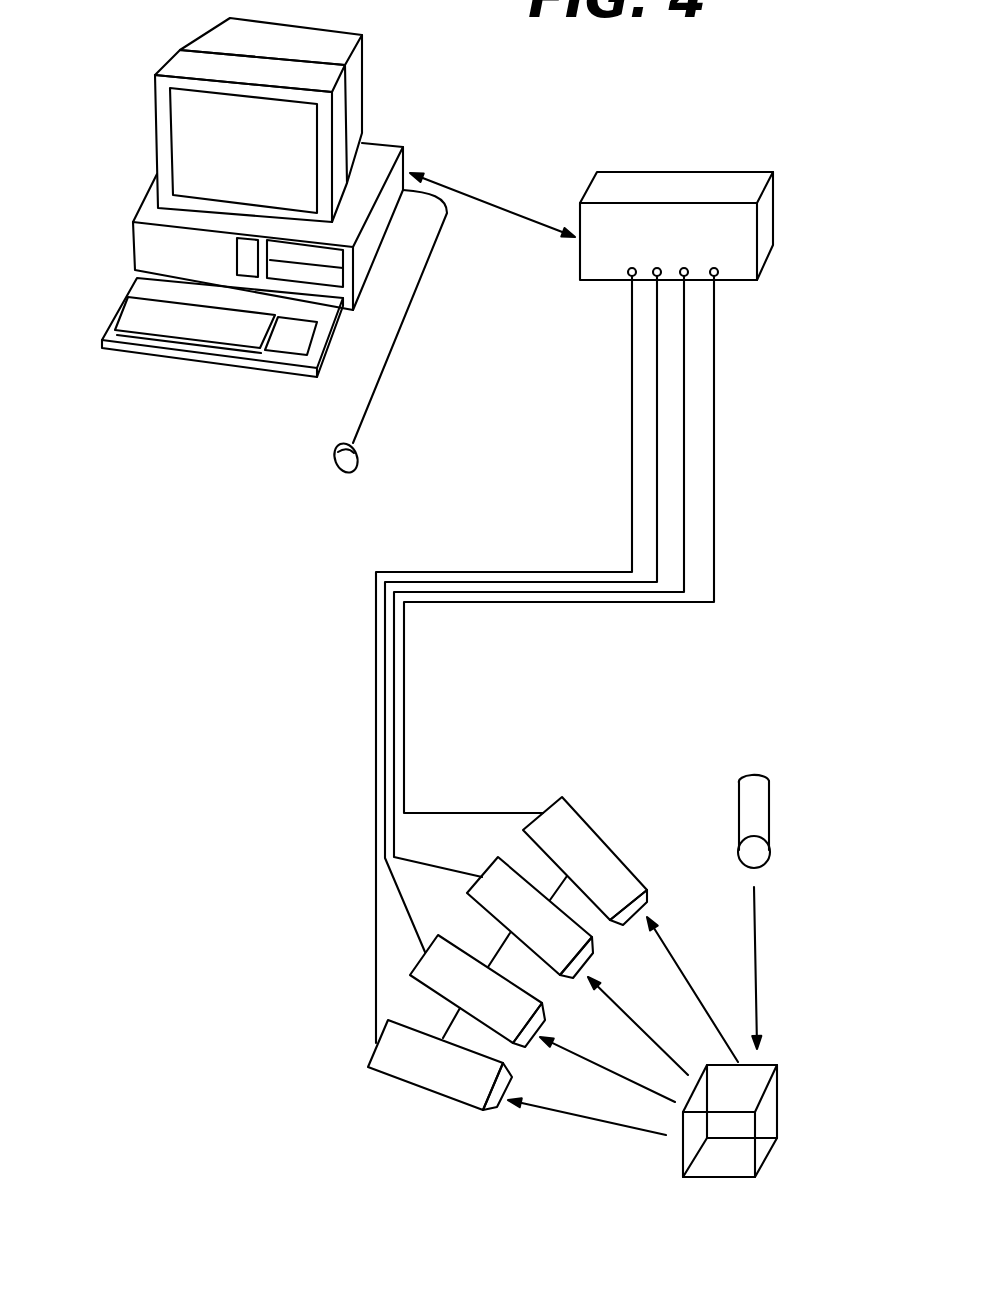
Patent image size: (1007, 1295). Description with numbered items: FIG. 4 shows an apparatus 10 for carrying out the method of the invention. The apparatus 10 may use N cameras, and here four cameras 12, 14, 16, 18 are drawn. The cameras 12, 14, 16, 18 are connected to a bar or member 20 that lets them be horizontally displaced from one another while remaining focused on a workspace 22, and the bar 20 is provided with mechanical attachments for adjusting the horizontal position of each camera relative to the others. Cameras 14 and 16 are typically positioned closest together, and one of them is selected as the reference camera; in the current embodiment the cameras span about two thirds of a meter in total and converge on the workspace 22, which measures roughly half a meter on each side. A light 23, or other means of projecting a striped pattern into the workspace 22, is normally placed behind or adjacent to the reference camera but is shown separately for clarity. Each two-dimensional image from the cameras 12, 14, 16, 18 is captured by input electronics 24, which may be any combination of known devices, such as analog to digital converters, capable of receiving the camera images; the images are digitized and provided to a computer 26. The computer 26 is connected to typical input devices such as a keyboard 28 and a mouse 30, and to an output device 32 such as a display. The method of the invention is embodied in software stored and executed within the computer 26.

The apparatus 10 is at (520, 86).
The camera 12 is at (422, 1090).
The camera 14 is at (541, 1033).
The camera 16 is at (592, 972).
The camera 18 is at (622, 853).
The bar or member 20 is at (450, 1022).
The workspace 22 is at (777, 1096).
The light 23 is at (770, 821).
The input electronics 24 is at (677, 172).
The computer 26 is at (133, 249).
The keyboard 28 is at (127, 295).
The mouse 30 is at (339, 449).
The output device 32 is at (362, 89).